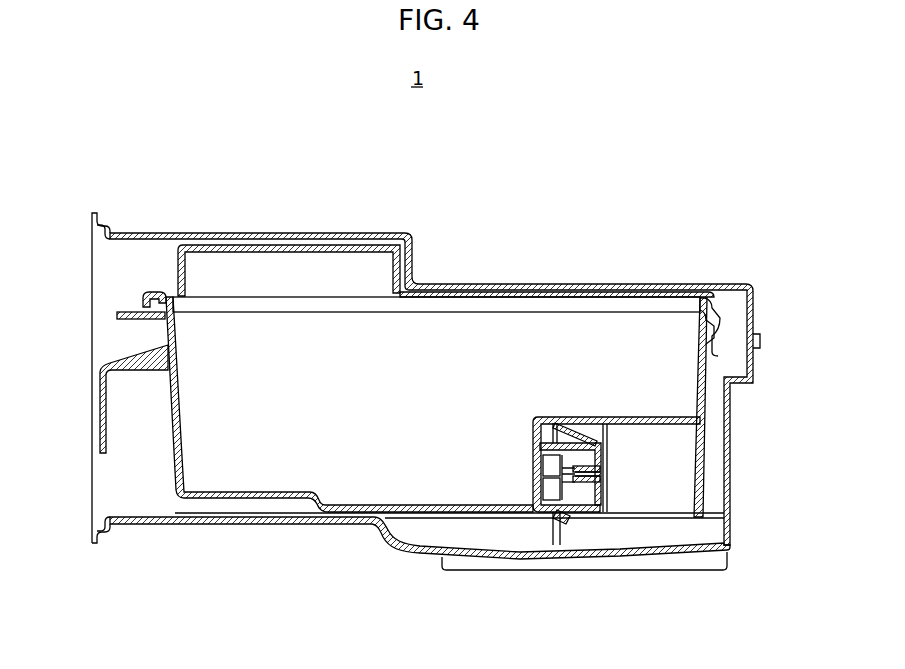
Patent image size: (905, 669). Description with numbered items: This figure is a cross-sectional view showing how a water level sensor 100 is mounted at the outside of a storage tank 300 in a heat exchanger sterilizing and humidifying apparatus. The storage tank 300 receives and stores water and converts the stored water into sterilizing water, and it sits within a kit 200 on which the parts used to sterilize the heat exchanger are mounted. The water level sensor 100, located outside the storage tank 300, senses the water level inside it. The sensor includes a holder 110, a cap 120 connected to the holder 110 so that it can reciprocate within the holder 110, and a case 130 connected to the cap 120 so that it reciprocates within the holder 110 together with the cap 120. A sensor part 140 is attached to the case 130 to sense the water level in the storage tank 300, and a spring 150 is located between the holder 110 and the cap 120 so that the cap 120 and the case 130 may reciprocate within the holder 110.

The water level sensor 100 is at (576, 498).
The holder 110 is at (602, 449).
The cap 120 is at (588, 441).
The case 130 is at (552, 494).
The sensor part 140 is at (552, 482).
The spring 150 is at (600, 491).
The kit 200 is at (768, 285).
The storage tank 300 is at (158, 476).